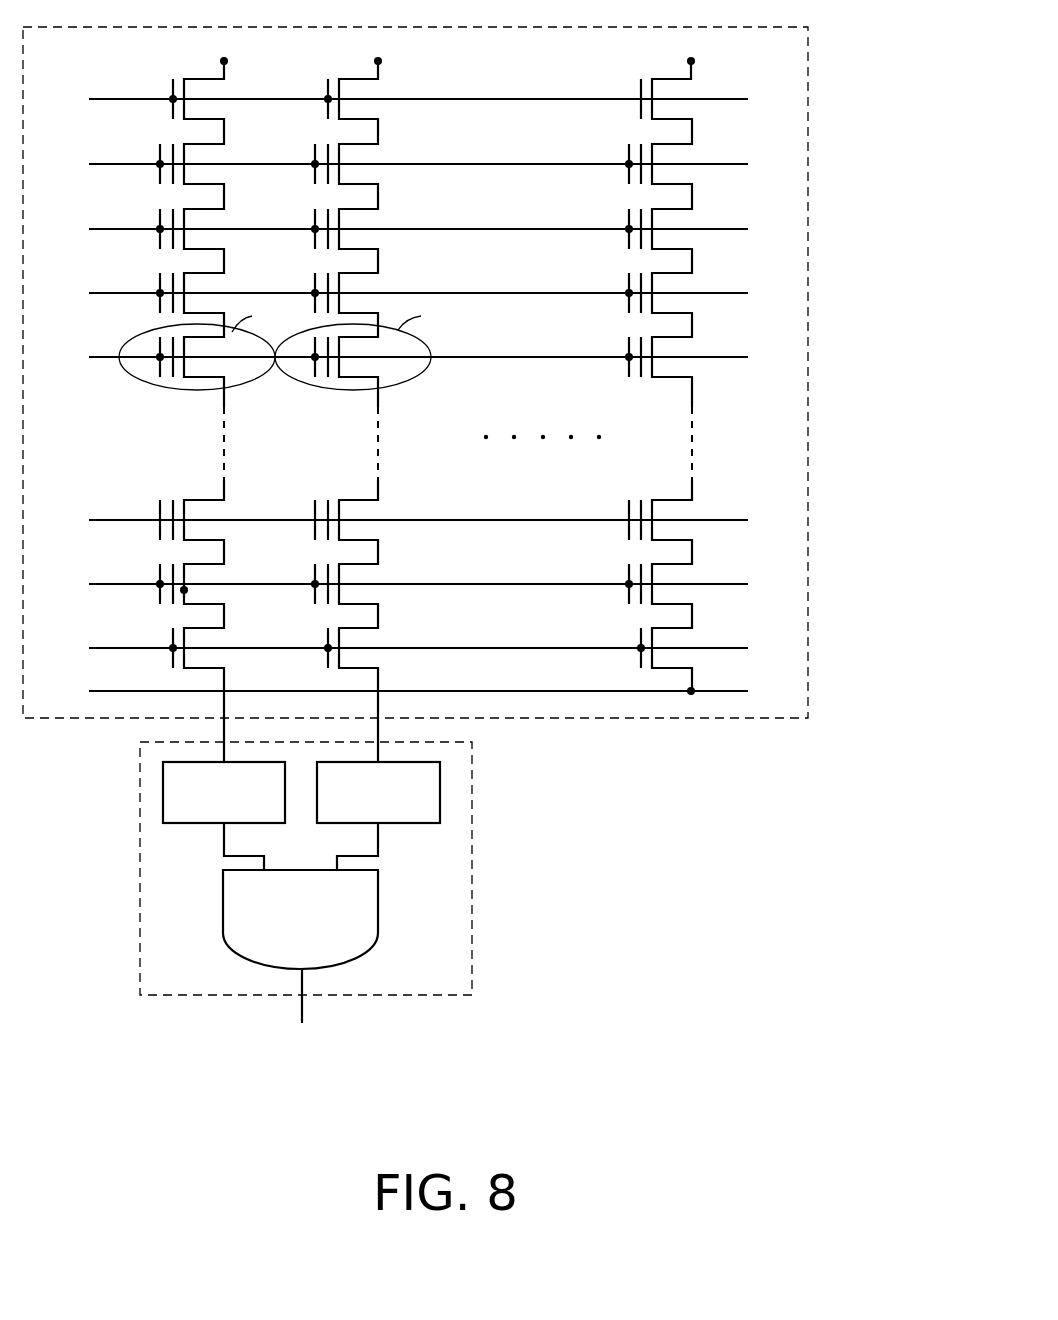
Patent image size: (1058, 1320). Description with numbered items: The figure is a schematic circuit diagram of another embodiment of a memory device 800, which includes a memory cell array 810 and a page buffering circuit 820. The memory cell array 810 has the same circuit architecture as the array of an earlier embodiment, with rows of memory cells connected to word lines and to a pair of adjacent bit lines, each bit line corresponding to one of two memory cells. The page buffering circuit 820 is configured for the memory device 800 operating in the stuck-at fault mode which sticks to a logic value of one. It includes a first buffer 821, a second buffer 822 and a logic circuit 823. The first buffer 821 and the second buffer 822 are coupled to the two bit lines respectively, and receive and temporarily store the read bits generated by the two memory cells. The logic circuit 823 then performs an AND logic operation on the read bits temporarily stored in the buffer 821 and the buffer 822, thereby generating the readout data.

The memory device 800 is at (474, 543).
The memory cell array 810 is at (808, 121).
The page buffering circuit 820 is at (330, 901).
The buffer 821 is at (163, 795).
The buffer 822 is at (440, 798).
The logic circuit 823 is at (380, 908).